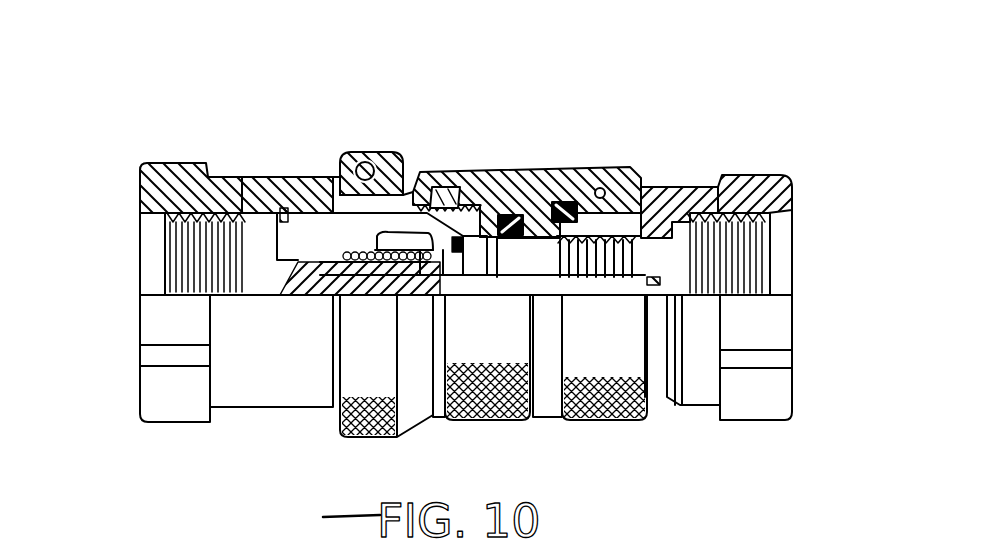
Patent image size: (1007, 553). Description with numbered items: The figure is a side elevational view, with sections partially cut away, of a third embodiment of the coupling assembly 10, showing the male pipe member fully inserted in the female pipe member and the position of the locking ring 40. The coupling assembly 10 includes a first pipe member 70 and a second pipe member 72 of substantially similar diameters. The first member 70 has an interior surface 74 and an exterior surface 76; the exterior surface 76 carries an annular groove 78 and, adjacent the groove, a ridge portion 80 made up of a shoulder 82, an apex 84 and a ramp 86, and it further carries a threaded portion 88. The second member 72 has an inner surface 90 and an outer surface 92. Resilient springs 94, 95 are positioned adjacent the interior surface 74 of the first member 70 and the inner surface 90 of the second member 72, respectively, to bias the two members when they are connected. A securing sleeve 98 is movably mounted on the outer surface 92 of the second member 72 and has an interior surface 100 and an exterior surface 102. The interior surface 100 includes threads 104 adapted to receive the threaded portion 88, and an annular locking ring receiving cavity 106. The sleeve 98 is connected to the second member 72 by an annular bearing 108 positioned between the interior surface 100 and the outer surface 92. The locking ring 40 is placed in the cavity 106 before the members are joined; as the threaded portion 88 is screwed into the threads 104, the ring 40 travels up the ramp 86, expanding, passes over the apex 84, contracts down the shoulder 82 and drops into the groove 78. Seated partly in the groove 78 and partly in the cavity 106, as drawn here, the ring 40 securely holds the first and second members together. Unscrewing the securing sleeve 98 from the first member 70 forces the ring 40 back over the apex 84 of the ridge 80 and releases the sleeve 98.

The coupling assembly 10 is at (596, 63).
The locking ring 40 is at (372, 162).
The first pipe member 70 is at (190, 132).
The second pipe member 72 is at (772, 162).
The interior surface 74 is at (140, 218).
The exterior surface 76 is at (240, 177).
The annular groove 78 is at (333, 178).
The ridge portion 80 is at (357, 212).
The shoulder 82 is at (497, 217).
The apex 84 is at (430, 170).
The ramp 86 is at (438, 190).
The threaded portion 88 is at (495, 170).
The inner surface 90 is at (790, 212).
The outer surface 92 is at (733, 173).
The resilient spring 94 is at (371, 296).
The resilient spring 95 is at (595, 280).
The securing sleeve 98 is at (343, 152).
The interior surface 100 is at (478, 175).
The exterior surface 102 is at (636, 183).
The threads 104 is at (560, 200).
The annular locking ring receiving cavity 106 is at (347, 153).
The annular bearing 108 is at (605, 190).